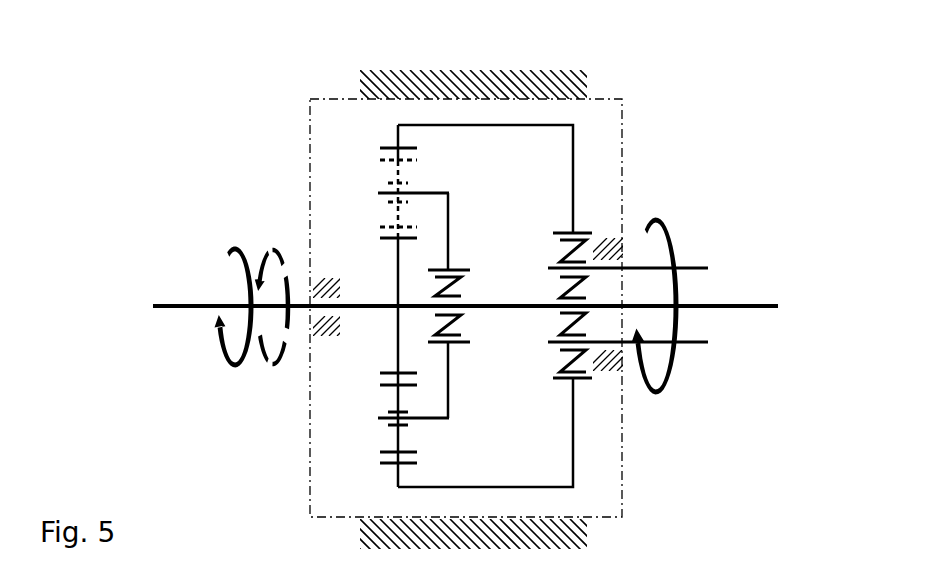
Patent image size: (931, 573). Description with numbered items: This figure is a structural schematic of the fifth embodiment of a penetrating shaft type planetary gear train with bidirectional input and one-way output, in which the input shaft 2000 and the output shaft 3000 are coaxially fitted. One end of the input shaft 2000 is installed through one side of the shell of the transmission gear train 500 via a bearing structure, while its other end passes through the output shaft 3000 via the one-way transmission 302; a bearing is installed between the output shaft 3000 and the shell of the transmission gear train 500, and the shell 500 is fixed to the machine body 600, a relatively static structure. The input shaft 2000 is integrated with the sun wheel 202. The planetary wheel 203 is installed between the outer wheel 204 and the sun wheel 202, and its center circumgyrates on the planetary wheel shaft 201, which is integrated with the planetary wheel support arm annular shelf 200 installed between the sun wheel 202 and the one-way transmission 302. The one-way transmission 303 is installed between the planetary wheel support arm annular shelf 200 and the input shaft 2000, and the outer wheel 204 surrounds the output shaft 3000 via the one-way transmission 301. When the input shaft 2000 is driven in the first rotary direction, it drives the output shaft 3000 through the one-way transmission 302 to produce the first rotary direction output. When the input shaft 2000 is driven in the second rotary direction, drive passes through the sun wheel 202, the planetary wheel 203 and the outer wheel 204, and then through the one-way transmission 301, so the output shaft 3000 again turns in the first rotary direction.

The machine body 600 is at (477, 92).
The shell of the transmission gear train 500 is at (308, 207).
The input shaft 2000 is at (198, 302).
The output shaft 3000 is at (692, 268).
The planetary wheel support arm annular shelf 200 is at (450, 222).
The planetary wheel shaft 201 is at (427, 420).
The sun wheel 202 is at (387, 239).
The planetary wheel 203 is at (398, 172).
The outer wheel 204 is at (417, 465).
The one-way transmission 301 is at (560, 250).
The one-way transmission 302 is at (563, 320).
The one-way transmission 303 is at (452, 288).